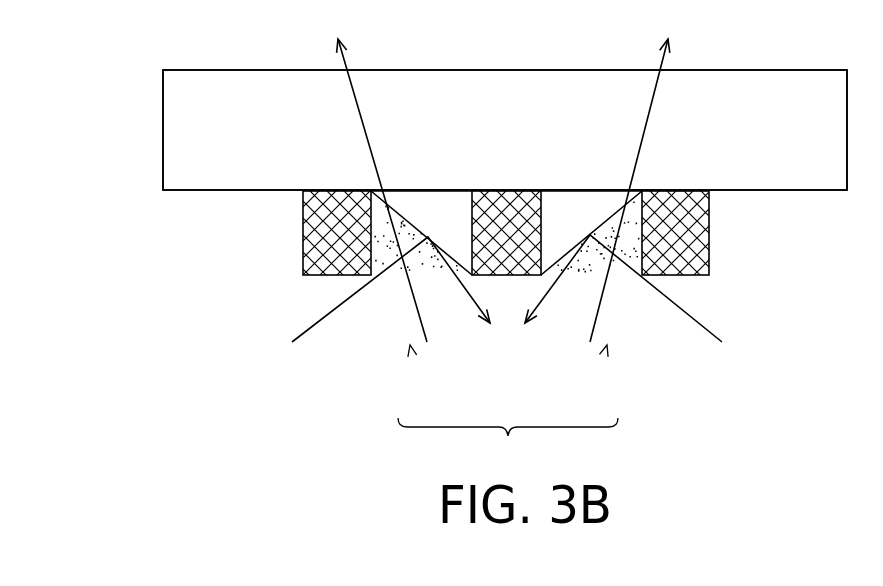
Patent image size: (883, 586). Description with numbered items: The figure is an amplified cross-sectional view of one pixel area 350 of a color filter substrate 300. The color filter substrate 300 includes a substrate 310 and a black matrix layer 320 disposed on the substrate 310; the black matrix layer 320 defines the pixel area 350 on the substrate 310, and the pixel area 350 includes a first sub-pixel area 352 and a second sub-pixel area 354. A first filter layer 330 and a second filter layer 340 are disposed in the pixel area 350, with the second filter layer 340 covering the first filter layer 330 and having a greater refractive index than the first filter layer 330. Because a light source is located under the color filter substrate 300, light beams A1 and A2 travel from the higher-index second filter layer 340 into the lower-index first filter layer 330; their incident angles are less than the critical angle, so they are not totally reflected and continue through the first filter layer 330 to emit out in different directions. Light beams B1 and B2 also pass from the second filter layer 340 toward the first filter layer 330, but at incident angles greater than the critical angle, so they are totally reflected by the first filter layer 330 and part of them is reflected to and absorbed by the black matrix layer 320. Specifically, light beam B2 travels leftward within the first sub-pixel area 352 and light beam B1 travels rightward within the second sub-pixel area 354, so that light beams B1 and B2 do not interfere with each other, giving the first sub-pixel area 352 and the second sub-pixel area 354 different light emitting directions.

The color filter substrate 300 is at (862, 437).
The substrate 310 is at (187, 127).
The black matrix layer 320 is at (313, 238).
The first filter layer 330 is at (437, 205).
The second filter layer 340 is at (380, 247).
The pixel area 350 is at (508, 444).
The first sub-pixel area 352 is at (607, 345).
The second sub-pixel area 354 is at (410, 345).
The light beam A1 is at (340, 58).
The light beam A2 is at (665, 58).
The light beam B1 is at (312, 327).
The light beam B2 is at (705, 323).